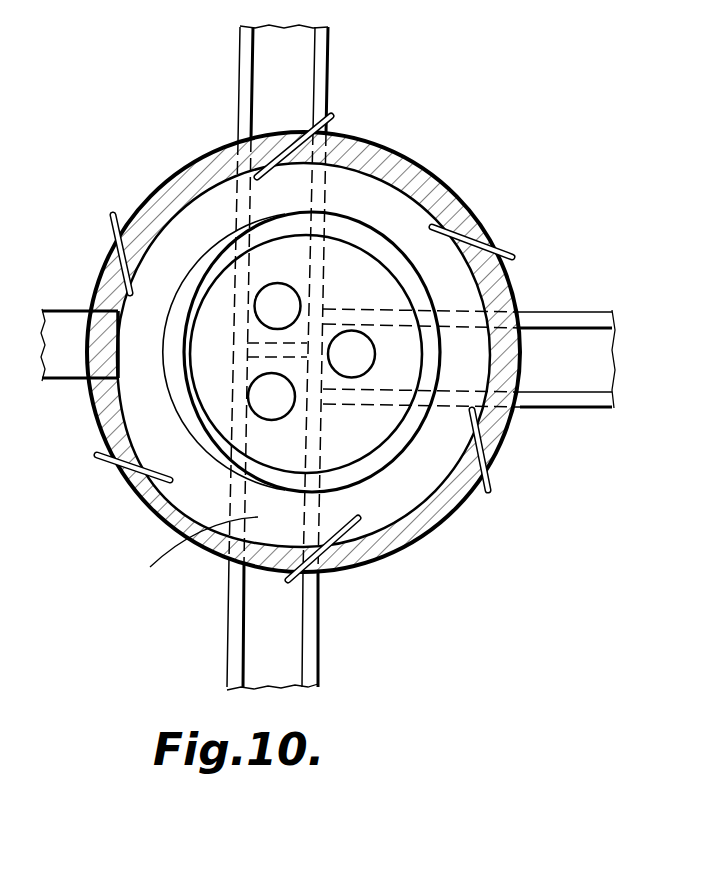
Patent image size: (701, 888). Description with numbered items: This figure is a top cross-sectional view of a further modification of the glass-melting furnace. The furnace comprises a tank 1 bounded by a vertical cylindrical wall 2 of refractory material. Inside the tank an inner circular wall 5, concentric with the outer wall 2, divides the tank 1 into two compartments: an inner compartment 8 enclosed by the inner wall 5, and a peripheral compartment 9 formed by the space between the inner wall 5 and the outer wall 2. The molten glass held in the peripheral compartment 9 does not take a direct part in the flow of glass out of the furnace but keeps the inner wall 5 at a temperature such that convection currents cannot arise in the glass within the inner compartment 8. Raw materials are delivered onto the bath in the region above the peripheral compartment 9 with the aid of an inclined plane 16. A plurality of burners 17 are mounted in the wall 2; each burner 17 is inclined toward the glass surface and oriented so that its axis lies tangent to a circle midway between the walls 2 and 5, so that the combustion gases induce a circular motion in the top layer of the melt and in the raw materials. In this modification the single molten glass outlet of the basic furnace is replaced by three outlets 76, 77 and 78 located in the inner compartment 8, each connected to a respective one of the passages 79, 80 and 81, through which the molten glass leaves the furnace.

The tank 1 is at (380, 143).
The vertical cylindrical wall 2 is at (431, 173).
The inner circular wall 5 is at (355, 229).
The inner compartment 8 is at (306, 354).
The peripheral compartment 9 is at (303, 355).
The inclined plane 16 is at (78, 338).
The burners 17 is at (113, 221).
The outlet 76 is at (280, 294).
The outlet 77 is at (357, 345).
The outlet 78 is at (263, 393).
The passage 79 is at (318, 91).
The passage 80 is at (460, 347).
The passage 81 is at (191, 556).